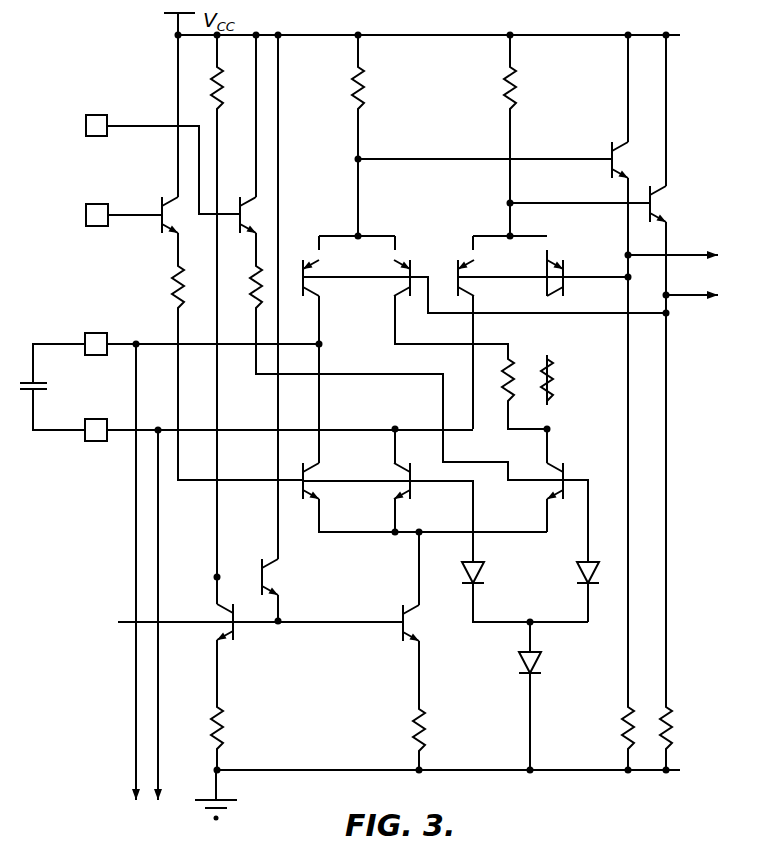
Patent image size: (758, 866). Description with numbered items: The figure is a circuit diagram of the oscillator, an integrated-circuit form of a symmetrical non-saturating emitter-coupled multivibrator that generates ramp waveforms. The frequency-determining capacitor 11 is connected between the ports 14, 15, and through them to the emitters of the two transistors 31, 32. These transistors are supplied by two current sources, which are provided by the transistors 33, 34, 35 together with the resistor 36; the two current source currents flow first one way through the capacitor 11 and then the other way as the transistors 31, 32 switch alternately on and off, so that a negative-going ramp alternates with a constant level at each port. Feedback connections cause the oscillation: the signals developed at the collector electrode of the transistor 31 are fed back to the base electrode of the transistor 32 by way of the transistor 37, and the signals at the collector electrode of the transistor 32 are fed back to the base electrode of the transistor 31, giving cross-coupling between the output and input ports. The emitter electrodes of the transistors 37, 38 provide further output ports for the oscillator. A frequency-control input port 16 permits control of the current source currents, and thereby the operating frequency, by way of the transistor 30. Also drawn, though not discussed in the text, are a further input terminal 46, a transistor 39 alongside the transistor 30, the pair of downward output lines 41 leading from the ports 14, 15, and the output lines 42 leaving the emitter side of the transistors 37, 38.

The capacitor 11 is at (36, 380).
The port 14 is at (97, 333).
The port 15 is at (97, 419).
The frequency-control input port 16 is at (98, 204).
The input terminal 46 is at (99, 115).
The transistor 30 is at (177, 226).
The transistor 31 is at (312, 272).
The transistor 32 is at (467, 272).
The transistor 33 is at (322, 487).
The transistor 34 is at (402, 475).
The transistor 35 is at (413, 623).
The resistor 36 is at (425, 733).
The transistor 37 is at (625, 160).
The transistor 38 is at (666, 212).
The transistor 39 is at (250, 212).
The output lines 41 is at (140, 795).
The output terminals 42 is at (718, 277).